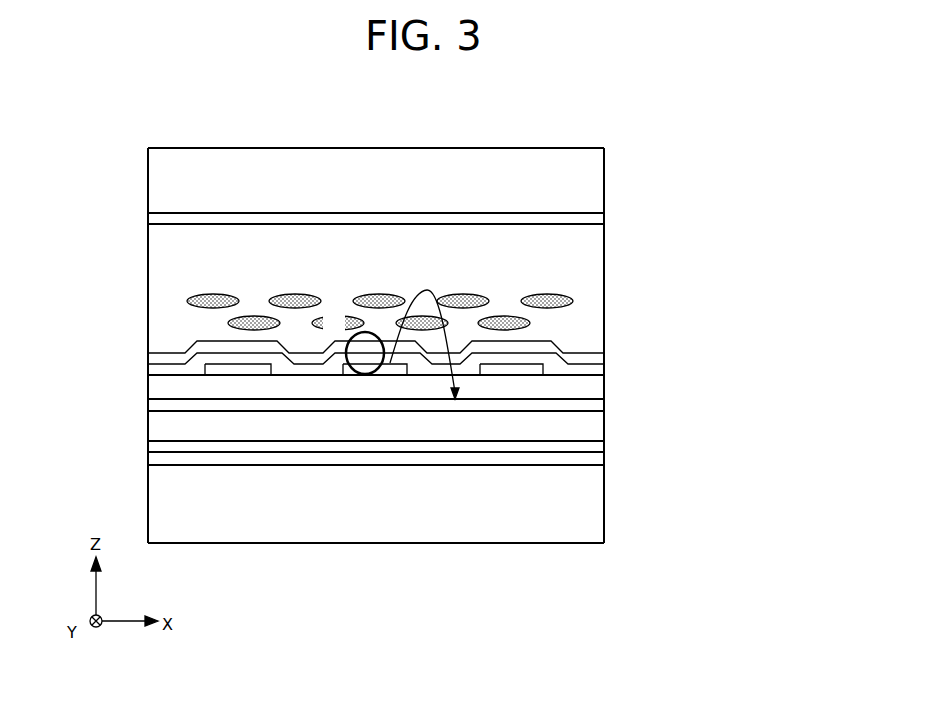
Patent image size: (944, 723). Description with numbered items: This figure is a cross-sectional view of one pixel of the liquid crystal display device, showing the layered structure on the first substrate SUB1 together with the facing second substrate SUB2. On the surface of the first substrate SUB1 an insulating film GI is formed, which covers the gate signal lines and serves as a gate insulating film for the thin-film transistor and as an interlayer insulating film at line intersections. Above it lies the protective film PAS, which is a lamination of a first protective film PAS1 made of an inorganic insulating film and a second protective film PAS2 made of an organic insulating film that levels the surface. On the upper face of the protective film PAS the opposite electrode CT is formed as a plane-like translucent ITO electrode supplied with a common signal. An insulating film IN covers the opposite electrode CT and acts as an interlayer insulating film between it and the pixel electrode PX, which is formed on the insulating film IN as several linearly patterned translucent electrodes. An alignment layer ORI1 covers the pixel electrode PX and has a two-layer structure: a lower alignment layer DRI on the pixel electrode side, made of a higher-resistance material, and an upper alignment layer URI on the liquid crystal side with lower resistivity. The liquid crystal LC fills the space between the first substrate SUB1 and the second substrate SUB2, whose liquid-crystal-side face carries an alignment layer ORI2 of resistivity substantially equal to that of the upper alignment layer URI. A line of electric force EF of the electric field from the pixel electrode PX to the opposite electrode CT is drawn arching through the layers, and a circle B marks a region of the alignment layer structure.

The second substrate SUB2 is at (245, 178).
The alignment layer ORI2 is at (335, 213).
The liquid crystal LC is at (165, 258).
The circle B is at (353, 343).
The alignment layer ORI1 is at (474, 320).
The upper alignment layer URI is at (582, 356).
The lower alignment layer DRI is at (583, 375).
The pixel electrode PX is at (243, 368).
The line of electric force EF is at (433, 292).
The insulating film IN is at (198, 390).
The opposite electrode CT is at (498, 405).
The protective film PAS is at (466, 422).
The second protective film PAS2 is at (593, 427).
The first protective film PAS1 is at (590, 449).
The insulating film GI is at (352, 458).
The first substrate SUB1 is at (263, 508).